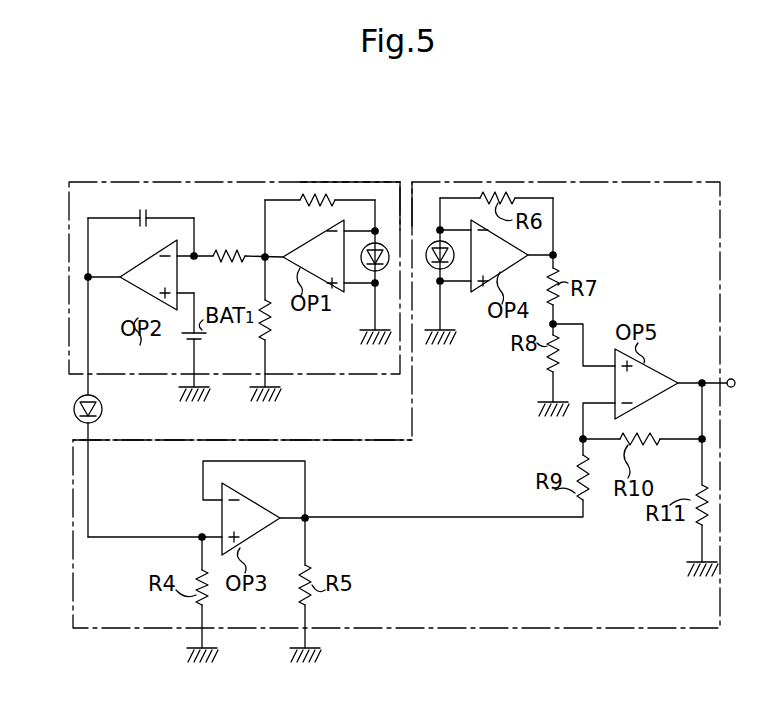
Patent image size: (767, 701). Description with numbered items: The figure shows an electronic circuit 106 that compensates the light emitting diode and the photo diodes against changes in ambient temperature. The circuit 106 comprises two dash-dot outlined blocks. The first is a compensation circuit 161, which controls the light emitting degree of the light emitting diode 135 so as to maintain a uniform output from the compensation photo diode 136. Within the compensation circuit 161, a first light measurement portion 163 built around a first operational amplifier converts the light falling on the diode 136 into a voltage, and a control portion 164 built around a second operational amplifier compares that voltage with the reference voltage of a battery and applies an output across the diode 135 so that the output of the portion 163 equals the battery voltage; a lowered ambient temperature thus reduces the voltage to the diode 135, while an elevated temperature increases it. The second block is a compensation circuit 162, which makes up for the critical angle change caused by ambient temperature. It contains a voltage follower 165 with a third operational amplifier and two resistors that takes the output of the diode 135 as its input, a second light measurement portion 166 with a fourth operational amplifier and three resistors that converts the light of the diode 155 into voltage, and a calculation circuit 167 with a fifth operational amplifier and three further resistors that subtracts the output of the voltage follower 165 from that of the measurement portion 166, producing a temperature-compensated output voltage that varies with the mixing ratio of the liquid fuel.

The compensation circuit 161 is at (82, 181).
The compensation circuit 162 is at (608, 181).
The first light measurement portion 163 is at (377, 188).
The control portion 164 is at (186, 214).
The voltage follower 165 is at (303, 450).
The second light measurement portion 166 is at (553, 195).
The calculation circuit 167 is at (659, 360).
The electronic circuit 106 is at (410, 188).
The light emitting diode 135 is at (75, 401).
The compensation photo diode 136 is at (364, 267).
The diode 155 is at (447, 270).